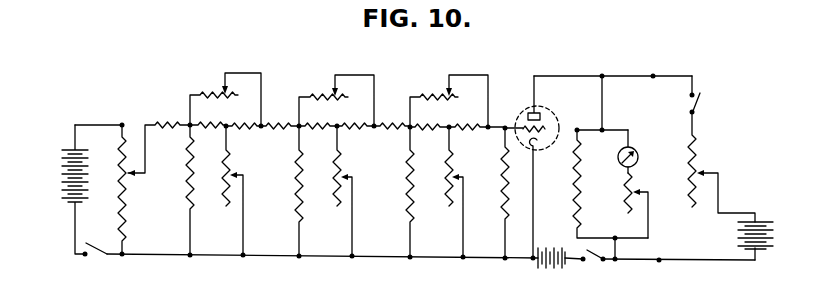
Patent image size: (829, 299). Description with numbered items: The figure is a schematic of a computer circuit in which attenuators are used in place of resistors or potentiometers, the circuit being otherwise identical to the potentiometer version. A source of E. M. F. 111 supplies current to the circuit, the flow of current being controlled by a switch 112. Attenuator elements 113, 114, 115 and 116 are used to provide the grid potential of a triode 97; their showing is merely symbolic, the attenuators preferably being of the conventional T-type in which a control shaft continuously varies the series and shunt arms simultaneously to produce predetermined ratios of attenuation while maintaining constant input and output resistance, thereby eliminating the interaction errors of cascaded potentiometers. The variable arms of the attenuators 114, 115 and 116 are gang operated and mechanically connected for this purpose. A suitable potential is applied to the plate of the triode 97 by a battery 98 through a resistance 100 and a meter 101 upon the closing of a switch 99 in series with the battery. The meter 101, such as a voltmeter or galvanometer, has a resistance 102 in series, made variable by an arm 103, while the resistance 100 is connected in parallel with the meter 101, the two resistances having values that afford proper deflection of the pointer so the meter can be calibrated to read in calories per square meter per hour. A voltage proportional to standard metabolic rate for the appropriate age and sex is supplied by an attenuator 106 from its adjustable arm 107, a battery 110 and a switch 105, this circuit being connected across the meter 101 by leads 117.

The triode 97 is at (553, 110).
The battery 98 is at (557, 270).
The switch 99 is at (595, 268).
The resistance 100 is at (583, 188).
The meter 101 is at (635, 150).
The resistance 102 is at (627, 187).
The arm 103 is at (645, 190).
The switch 105 is at (705, 102).
The attenuator 106 is at (698, 147).
The adjustable arm 107 is at (716, 172).
The battery 110 is at (767, 225).
The source of E. M. F. 111 is at (60, 172).
The switch 112 is at (96, 258).
The attenuator element 113 is at (127, 129).
The attenuator element 114 is at (200, 104).
The attenuator element 115 is at (312, 107).
The attenuator element 116 is at (432, 107).
The leads 117 is at (653, 76).